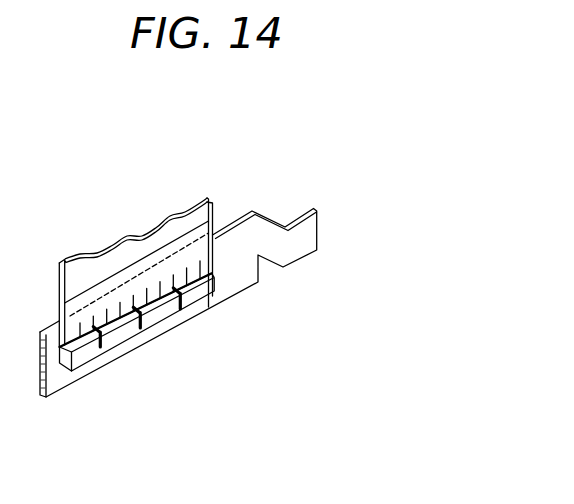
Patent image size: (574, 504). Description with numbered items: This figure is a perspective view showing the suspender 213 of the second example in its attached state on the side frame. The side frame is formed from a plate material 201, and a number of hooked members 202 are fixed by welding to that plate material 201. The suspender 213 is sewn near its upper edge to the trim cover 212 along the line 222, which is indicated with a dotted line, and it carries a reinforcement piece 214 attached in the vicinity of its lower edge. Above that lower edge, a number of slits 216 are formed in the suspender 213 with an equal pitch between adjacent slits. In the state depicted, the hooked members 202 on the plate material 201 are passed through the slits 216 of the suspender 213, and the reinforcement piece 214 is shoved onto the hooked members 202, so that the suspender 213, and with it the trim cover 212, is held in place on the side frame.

The plate material 201 is at (260, 222).
The hooked members 202 is at (140, 324).
The trim cover 212 is at (213, 204).
The suspender 213 is at (137, 264).
The reinforcement piece 214 is at (87, 357).
The slits 216 is at (126, 334).
The line 222 is at (96, 288).